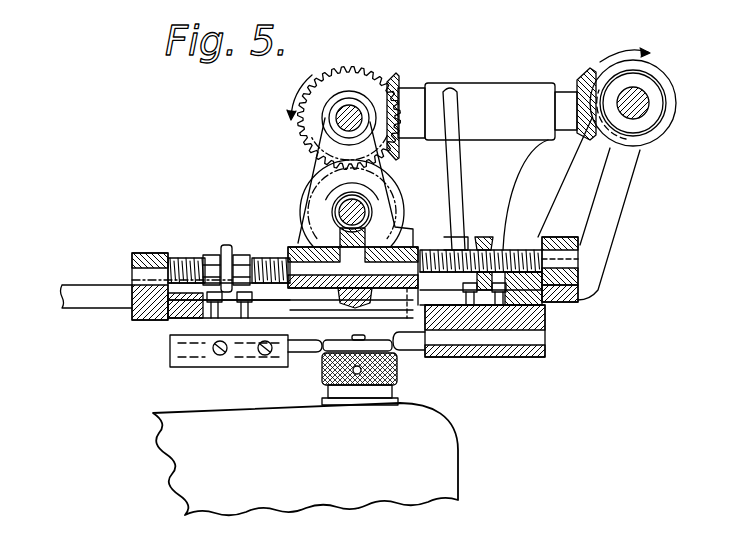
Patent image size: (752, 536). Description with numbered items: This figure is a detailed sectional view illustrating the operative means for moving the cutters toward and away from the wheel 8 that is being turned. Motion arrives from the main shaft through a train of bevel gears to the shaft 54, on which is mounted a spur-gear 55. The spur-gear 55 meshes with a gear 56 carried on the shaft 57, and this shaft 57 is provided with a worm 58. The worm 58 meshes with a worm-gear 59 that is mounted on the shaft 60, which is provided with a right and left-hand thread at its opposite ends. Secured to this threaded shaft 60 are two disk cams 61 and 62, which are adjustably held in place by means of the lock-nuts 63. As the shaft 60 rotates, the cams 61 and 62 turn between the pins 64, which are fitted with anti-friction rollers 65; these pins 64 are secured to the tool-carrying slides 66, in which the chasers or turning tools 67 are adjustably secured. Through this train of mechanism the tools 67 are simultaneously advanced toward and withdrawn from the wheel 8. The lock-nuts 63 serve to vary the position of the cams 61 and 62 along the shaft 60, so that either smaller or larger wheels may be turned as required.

The wheel 8 is at (342, 340).
The shaft 54 is at (345, 127).
The spur-gear 55 is at (300, 122).
The gear 56 is at (318, 208).
The shaft 57 is at (364, 207).
The worm 58 is at (372, 217).
The worm-gear 59 is at (279, 268).
The shaft 60 is at (203, 260).
The disk cam 61 is at (482, 237).
The disk cam 62 is at (226, 245).
The lock-nut 63 is at (210, 298).
The pin 64 is at (497, 307).
The anti-friction roller 65 is at (243, 302).
The tool-carrying slide 66 is at (287, 360).
The chaser or turning tool 67 is at (300, 353).